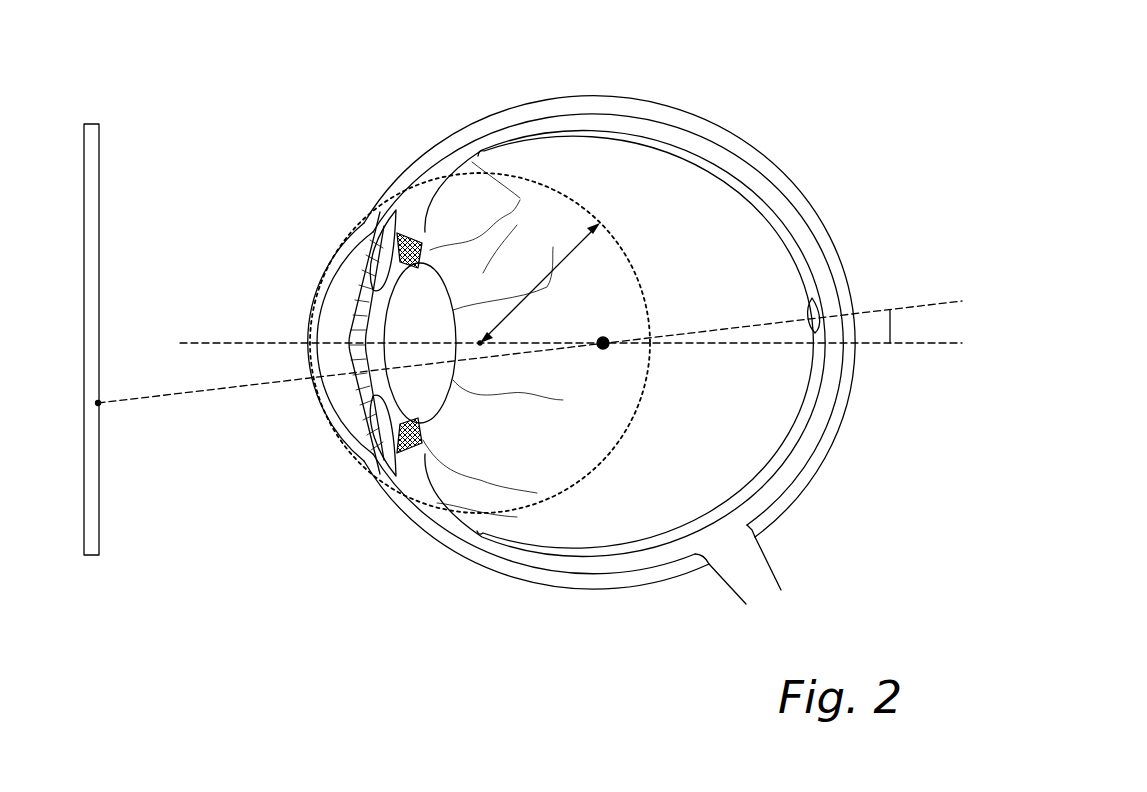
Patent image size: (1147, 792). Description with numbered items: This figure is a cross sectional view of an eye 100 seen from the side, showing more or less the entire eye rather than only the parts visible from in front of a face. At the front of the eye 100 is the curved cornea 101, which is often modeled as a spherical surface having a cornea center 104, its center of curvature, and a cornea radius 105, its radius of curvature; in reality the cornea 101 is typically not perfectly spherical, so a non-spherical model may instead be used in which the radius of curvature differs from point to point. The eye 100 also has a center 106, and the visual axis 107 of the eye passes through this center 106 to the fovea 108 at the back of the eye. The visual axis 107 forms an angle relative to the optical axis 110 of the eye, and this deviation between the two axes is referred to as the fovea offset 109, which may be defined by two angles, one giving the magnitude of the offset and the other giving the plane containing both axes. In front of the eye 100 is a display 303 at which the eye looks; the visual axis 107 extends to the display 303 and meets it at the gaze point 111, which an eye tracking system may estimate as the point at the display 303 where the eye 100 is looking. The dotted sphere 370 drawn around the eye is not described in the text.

The eye 100 is at (258, 88).
The cornea 101 is at (343, 447).
The cornea center 104 is at (482, 348).
The cornea radius 105 is at (550, 291).
The center 106 is at (607, 350).
The visual axis 107 is at (228, 392).
The fovea 108 is at (817, 320).
The fovea offset 109 is at (892, 322).
The optical axis 110 is at (210, 341).
The gaze point 111 is at (100, 406).
The display 303 is at (99, 158).
The rotation sphere of the eye 370 is at (624, 437).